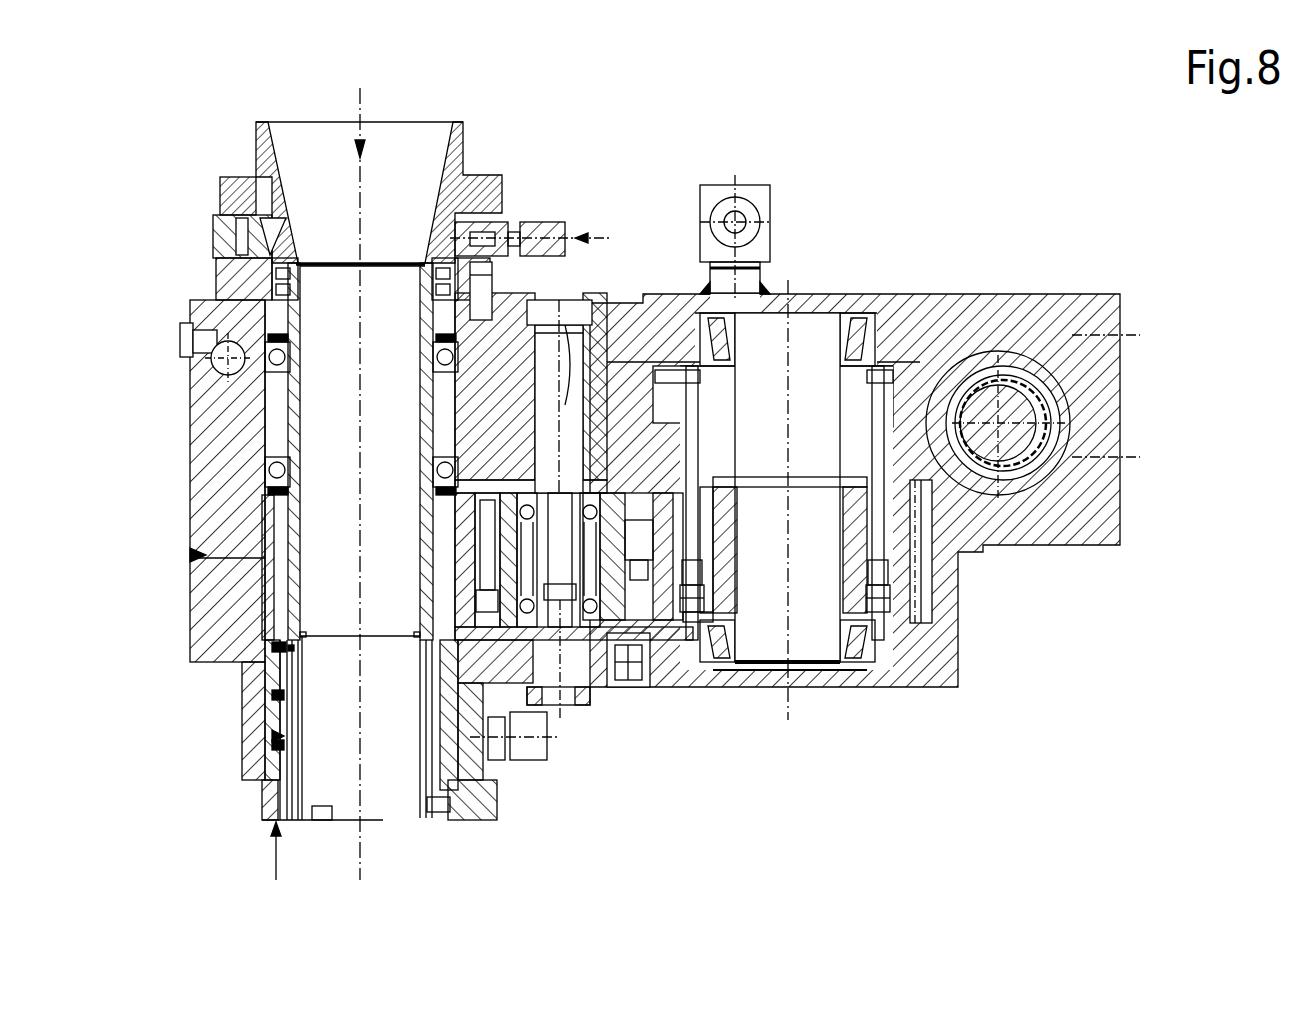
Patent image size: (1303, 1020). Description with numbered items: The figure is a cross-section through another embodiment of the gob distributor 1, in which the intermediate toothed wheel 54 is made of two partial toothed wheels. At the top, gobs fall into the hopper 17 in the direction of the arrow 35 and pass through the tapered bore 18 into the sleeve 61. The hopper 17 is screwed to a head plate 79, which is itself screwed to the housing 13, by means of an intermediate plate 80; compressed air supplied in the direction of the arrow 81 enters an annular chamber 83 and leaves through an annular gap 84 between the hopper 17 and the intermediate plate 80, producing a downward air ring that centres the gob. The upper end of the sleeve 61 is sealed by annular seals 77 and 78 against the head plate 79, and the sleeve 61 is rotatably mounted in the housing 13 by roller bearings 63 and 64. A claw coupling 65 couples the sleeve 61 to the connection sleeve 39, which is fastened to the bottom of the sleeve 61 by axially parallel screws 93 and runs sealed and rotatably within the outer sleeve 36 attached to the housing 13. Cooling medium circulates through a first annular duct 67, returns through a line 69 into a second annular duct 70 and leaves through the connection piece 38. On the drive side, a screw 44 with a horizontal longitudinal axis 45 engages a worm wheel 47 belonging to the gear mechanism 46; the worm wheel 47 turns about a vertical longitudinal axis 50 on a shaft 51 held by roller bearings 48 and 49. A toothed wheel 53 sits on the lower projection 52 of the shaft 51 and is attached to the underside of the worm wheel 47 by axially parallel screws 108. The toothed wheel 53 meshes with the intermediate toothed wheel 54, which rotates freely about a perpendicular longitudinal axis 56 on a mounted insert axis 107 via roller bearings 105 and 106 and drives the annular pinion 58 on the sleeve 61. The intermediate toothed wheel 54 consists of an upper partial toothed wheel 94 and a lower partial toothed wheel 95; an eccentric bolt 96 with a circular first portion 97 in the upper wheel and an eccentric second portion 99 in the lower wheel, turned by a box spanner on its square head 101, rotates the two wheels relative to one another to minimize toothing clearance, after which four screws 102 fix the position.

The gob distributor 1 is at (832, 182).
The housing 13 is at (188, 404).
The hopper 17 is at (463, 140).
The taper bore 18 is at (362, 212).
The arrow 35 is at (362, 98).
The outer sleeve 36 is at (242, 728).
The connection piece 38 is at (540, 746).
The connection sleeve 39 is at (497, 810).
The screw 44 is at (1116, 344).
The horizontal longitudinal axis 45 is at (1095, 468).
The gear mechanism 46 is at (962, 624).
The worm wheel 47 is at (940, 372).
The roller bearing 48 is at (740, 322).
The roller bearing 49 is at (872, 640).
The vertical longitudinal axis 50 is at (790, 710).
The shaft 51 is at (832, 335).
The lower projection 52 is at (770, 650).
The toothed wheel 53 is at (962, 590).
The intermediate toothed wheel 54 is at (462, 512).
The perpendicular longitudinal axis 56 is at (559, 396).
The annular pinion 58 is at (278, 506).
The sleeve 61 is at (296, 392).
The roller bearing 63 is at (290, 360).
The roller bearing 64 is at (290, 470).
The claw coupling 65 is at (303, 643).
The first annular duct 67 is at (290, 710).
The line 69 is at (295, 780).
The second annular duct 70 is at (470, 740).
The annular seal 77 is at (290, 300).
The annular seal 78 is at (292, 276).
The head plate 79 is at (216, 288).
The intermediate plate 80 is at (218, 228).
The arrow 81 is at (596, 238).
The annular chamber 83 is at (216, 244).
The annular gap 84 is at (298, 264).
The screw 93 is at (444, 812).
The upper partial toothed wheel 94 is at (460, 545).
The lower partial toothed wheel 95 is at (470, 570).
The eccentric bolt 96 is at (704, 536).
The first portion 97 is at (706, 512).
The second portion 99 is at (704, 590).
The square head 101 is at (650, 660).
The screw 102 is at (482, 564).
The roller bearing 105 is at (558, 560).
The roller bearing 106 is at (552, 612).
The insert axis 107 is at (580, 445).
The screw 108 is at (698, 406).